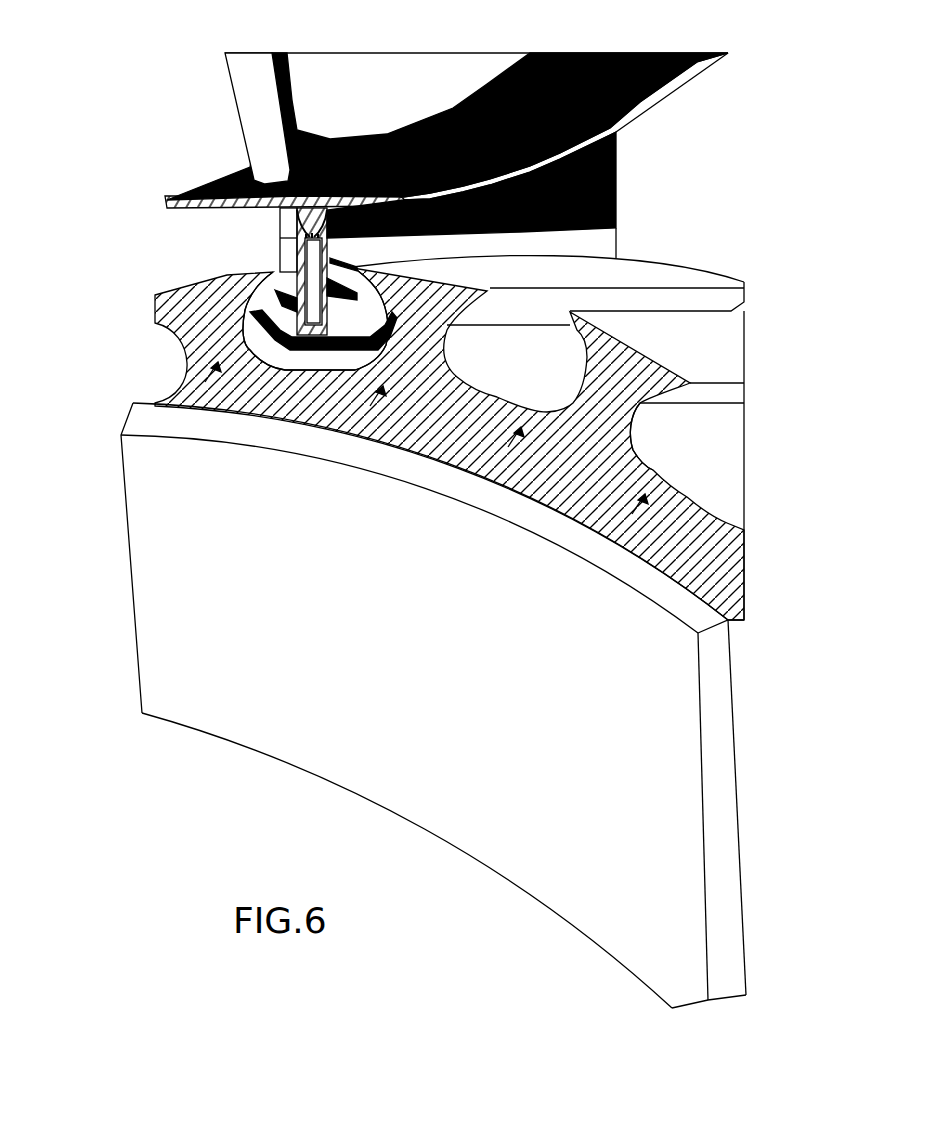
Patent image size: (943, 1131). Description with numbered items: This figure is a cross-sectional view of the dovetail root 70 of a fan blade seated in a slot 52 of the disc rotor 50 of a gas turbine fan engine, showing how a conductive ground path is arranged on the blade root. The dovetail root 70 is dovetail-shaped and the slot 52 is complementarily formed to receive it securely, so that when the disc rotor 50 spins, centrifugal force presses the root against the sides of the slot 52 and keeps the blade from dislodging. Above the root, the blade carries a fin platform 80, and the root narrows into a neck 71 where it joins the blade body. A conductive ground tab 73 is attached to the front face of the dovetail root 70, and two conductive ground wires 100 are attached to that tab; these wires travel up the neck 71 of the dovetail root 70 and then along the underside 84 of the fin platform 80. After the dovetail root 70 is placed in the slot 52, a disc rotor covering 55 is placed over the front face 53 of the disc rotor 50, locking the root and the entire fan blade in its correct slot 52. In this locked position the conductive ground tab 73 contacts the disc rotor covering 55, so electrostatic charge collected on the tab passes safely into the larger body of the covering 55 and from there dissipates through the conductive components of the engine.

The disc rotor 50 is at (718, 350).
The slot 52 is at (533, 375).
The front face of the disc rotor 53 is at (655, 471).
The disc rotor covering 55 is at (210, 592).
The dovetail root 70 is at (265, 337).
The neck of the dovetail root 71 is at (615, 213).
The conductive ground tab 73 is at (313, 262).
The fin platform 80 is at (620, 52).
The underside of the fin platform 84 is at (697, 77).
The conductive ground wires 100 is at (292, 212).